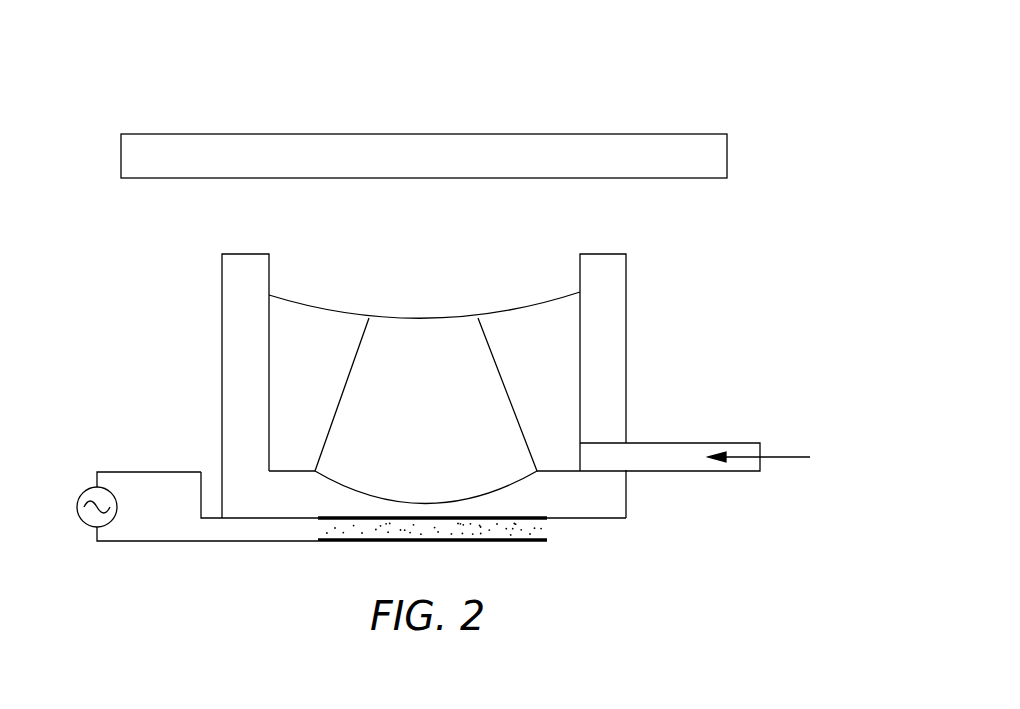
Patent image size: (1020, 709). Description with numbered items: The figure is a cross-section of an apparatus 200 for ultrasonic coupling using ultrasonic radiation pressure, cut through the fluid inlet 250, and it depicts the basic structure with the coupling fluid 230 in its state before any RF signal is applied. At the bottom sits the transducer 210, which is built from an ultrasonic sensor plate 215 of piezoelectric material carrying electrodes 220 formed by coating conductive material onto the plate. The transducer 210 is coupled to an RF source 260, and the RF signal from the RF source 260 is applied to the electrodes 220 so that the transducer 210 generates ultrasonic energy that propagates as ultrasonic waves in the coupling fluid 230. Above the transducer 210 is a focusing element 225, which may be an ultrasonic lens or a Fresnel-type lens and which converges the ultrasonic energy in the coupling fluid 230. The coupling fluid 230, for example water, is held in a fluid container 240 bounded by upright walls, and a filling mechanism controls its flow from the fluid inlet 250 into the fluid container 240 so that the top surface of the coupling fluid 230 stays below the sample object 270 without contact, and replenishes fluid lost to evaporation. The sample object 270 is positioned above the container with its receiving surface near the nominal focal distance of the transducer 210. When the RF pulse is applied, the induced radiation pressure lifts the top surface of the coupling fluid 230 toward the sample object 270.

The apparatus 200 is at (662, 59).
The transducer 210 is at (442, 548).
The ultrasonic sensor plate 215 is at (345, 548).
The electrodes 220 is at (545, 521).
The focusing element 225 is at (279, 477).
The coupling fluid 230 is at (318, 313).
The fluid container 240 is at (628, 348).
The fluid inlet 250 is at (690, 443).
The RF source 260 is at (78, 506).
The sample object 270 is at (713, 134).